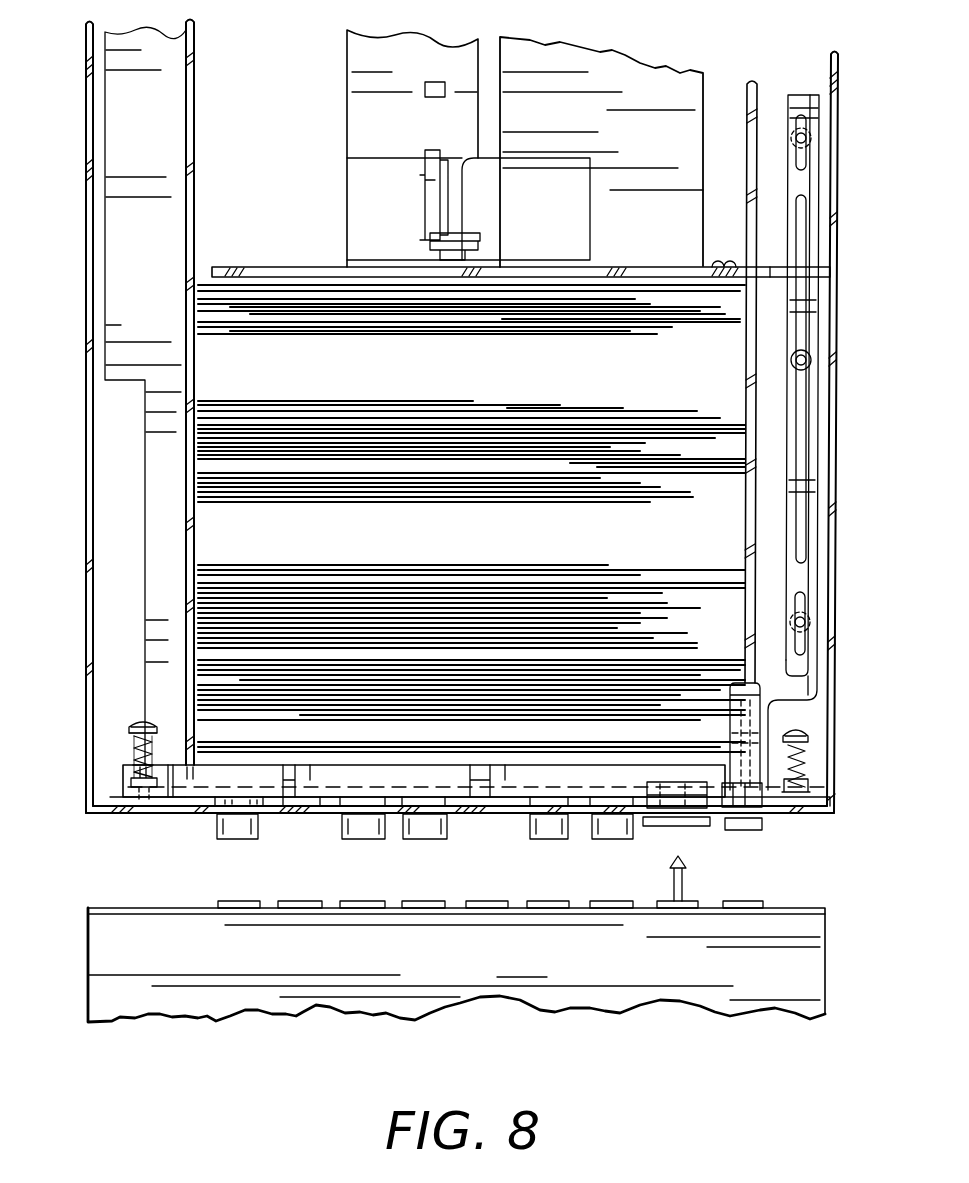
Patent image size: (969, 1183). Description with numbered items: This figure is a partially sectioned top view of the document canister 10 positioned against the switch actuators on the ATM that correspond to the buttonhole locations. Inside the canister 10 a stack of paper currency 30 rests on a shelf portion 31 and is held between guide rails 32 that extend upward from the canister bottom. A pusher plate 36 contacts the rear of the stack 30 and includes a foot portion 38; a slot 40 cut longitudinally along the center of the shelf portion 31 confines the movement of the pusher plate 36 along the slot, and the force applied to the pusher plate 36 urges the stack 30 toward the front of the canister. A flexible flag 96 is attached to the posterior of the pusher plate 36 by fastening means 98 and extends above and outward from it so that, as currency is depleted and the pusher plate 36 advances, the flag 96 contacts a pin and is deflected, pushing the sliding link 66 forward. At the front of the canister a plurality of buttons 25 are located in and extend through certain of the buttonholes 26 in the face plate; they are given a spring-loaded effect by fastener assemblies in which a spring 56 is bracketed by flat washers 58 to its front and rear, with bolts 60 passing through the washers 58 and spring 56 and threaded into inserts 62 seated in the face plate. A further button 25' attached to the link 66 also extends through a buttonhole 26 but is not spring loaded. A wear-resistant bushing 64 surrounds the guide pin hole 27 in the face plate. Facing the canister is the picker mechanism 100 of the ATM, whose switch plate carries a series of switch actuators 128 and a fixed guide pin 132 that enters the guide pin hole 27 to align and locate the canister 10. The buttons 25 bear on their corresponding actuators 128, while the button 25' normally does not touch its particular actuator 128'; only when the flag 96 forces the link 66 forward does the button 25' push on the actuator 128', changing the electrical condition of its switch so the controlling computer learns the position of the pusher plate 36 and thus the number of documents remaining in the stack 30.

The document canister 10 is at (68, 317).
The buttons 25 is at (425, 842).
The button 25' is at (794, 820).
The buttonholes 26 is at (493, 818).
The guide pin hole 27 is at (680, 836).
The stack of paper currency 30 is at (490, 383).
The shelf portion 31 is at (396, 123).
The guide rails 32 is at (192, 148).
The pusher plate 36 is at (276, 267).
The foot portion 38 is at (548, 217).
The slot 40 is at (489, 108).
The spring 56 is at (140, 757).
The flat washers 58 is at (130, 735).
The bolts 60 is at (143, 732).
The threaded inserts 62 is at (146, 800).
The bushing 64 is at (693, 832).
The link 66 is at (812, 410).
The flag 96 is at (703, 270).
The fastening means 98 is at (736, 263).
The picker mechanism 100 is at (396, 961).
The actuators 128 is at (428, 885).
The switch actuator 128' is at (787, 886).
The guide pin 132 is at (678, 872).